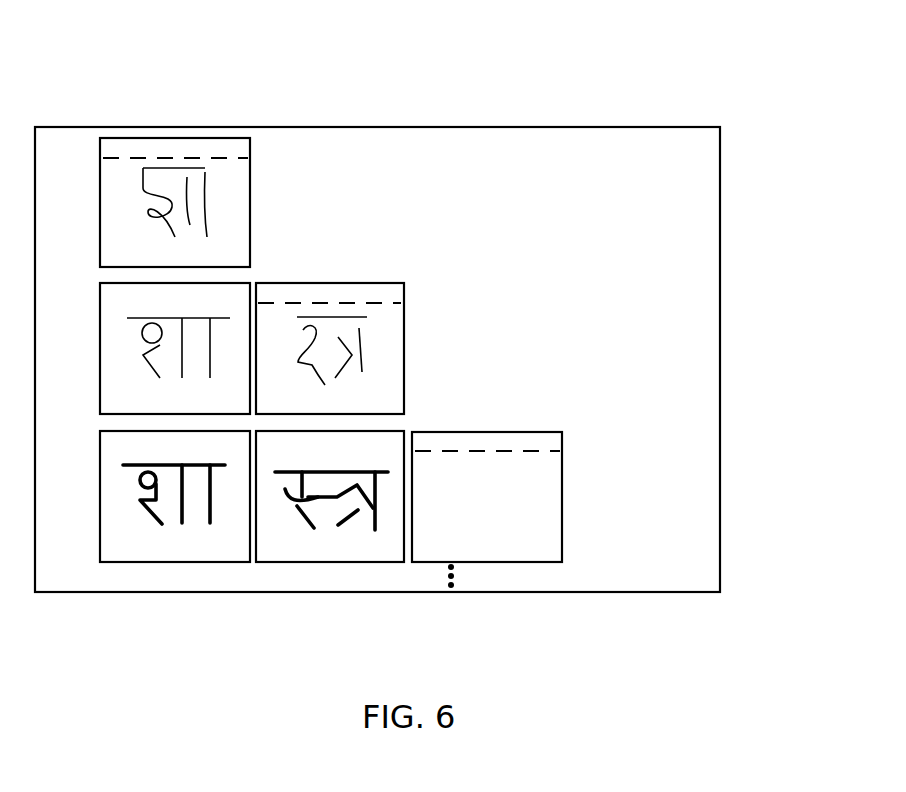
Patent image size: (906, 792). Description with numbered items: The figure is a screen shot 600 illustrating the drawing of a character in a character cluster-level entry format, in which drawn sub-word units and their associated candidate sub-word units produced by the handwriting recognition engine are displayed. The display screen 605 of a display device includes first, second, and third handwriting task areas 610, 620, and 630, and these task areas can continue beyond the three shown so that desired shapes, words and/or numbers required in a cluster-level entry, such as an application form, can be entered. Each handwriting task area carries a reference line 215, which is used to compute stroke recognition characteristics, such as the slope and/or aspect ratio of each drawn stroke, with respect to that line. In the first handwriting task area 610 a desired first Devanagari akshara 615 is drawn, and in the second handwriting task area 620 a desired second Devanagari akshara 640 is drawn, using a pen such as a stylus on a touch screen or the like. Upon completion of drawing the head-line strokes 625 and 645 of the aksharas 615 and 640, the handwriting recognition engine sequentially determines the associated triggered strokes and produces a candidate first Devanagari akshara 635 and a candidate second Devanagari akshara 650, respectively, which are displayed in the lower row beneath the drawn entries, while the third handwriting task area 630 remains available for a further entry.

The screen shot 600 is at (633, 63).
The display screen 605 is at (720, 251).
The reference line 215 is at (223, 157).
The first handwriting task area 610 is at (250, 228).
The first Devanagari akshara 615 is at (182, 233).
The second handwriting task area 620 is at (403, 385).
The head-line stroke 625 is at (158, 160).
The third handwriting task area 630 is at (562, 532).
The candidate first Devanagari akshara 635 is at (168, 378).
The second Devanagari akshara 640 is at (323, 383).
The head-line stroke 645 is at (303, 315).
The candidate second Devanagari akshara 650 is at (327, 532).